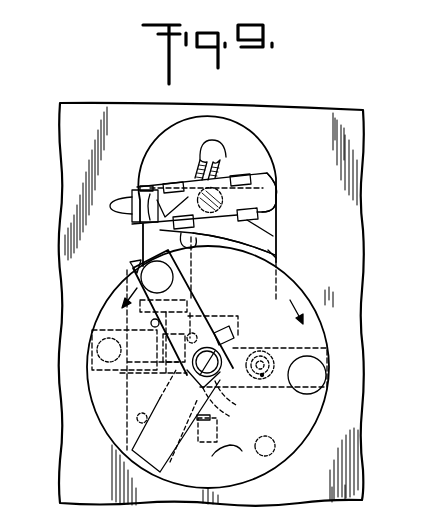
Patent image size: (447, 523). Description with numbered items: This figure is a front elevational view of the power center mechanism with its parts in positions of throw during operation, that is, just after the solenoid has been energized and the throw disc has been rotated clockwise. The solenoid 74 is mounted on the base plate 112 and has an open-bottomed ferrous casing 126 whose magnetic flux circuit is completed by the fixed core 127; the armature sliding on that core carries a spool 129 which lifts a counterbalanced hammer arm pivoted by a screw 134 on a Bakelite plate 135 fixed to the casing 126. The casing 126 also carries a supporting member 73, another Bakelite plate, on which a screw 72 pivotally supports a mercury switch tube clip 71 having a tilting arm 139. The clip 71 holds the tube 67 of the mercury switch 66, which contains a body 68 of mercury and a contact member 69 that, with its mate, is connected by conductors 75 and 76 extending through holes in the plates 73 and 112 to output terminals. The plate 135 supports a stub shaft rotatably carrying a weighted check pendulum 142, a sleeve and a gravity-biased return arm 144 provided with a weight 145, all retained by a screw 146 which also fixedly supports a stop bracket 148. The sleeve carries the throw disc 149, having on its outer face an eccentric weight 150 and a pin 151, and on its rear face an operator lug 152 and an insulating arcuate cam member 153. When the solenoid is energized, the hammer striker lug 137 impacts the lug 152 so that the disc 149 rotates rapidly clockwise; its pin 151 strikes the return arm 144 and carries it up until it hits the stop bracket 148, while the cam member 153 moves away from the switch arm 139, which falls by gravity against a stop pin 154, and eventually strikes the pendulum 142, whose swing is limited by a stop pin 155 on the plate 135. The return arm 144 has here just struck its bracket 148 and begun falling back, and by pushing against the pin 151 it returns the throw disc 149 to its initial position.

The mercury switch 66 is at (274, 178).
The tube 67 is at (278, 203).
The body of mercury 68 is at (142, 225).
The contact member 69 is at (137, 189).
The mercury switch tube clip 71 is at (274, 222).
The screw 72 is at (278, 248).
The supporting member 73 is at (262, 150).
The solenoid 74 is at (279, 256).
The conductor 75 is at (201, 150).
The conductor 76 is at (222, 148).
The base plate 112 is at (348, 397).
The casing 126 is at (254, 227).
The fixed core 127 is at (235, 459).
The spool 129 is at (176, 421).
The screw 134 is at (268, 348).
The plate 135 is at (125, 387).
The striker lug 137 is at (90, 348).
The tilting arm 139 is at (193, 244).
The pendulum 142 is at (168, 462).
The return arm 144 is at (198, 330).
The weight 145 is at (130, 267).
The screw 146 is at (183, 378).
The stop bracket 148 is at (237, 337).
The throw disc 149 is at (322, 320).
The weight 150 is at (328, 373).
The pin 151 is at (151, 324).
The operator lug 152 is at (276, 448).
The arcuate cam member 153 is at (250, 405).
The stop pin 154 is at (212, 302).
The stop pin 155 is at (137, 418).